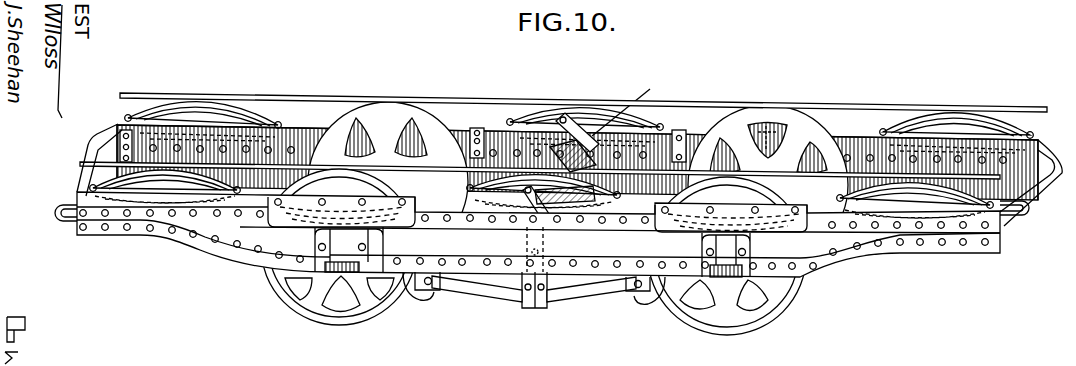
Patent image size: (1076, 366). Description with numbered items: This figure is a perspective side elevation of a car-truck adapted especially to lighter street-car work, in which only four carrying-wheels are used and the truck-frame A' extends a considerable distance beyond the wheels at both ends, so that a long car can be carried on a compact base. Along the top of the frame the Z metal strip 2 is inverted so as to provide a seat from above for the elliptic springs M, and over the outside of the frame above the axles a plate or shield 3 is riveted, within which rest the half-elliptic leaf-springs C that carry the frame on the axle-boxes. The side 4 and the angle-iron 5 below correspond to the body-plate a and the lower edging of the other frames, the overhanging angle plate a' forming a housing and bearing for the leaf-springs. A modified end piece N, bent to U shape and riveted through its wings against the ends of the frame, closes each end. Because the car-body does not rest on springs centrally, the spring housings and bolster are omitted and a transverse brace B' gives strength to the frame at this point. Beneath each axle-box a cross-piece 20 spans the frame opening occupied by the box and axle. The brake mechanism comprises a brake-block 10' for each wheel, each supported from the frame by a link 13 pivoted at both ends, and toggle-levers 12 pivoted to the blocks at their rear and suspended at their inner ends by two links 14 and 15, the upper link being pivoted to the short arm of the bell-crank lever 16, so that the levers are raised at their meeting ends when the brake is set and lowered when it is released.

The Z metal strip 2 is at (614, 223).
The plate or shield 3 is at (403, 224).
The side 4 is at (303, 132).
The angle-iron 5 is at (831, 267).
The brake-block 10' is at (534, 296).
The toggle-levers 12 is at (534, 300).
The link 13 is at (464, 140).
The link 14 is at (557, 272).
The link 15 is at (544, 249).
The brake quadrant or bell-crank lever 16 is at (572, 114).
The cross-piece 20 is at (533, 252).
The truck-frame A' is at (440, 245).
The body-plate a is at (520, 262).
The angle plate or edging a' is at (363, 222).
The transverse brace B' is at (636, 104).
The leaf-springs C is at (316, 231).
The elliptic springs M is at (236, 104).
The end piece N is at (70, 182).